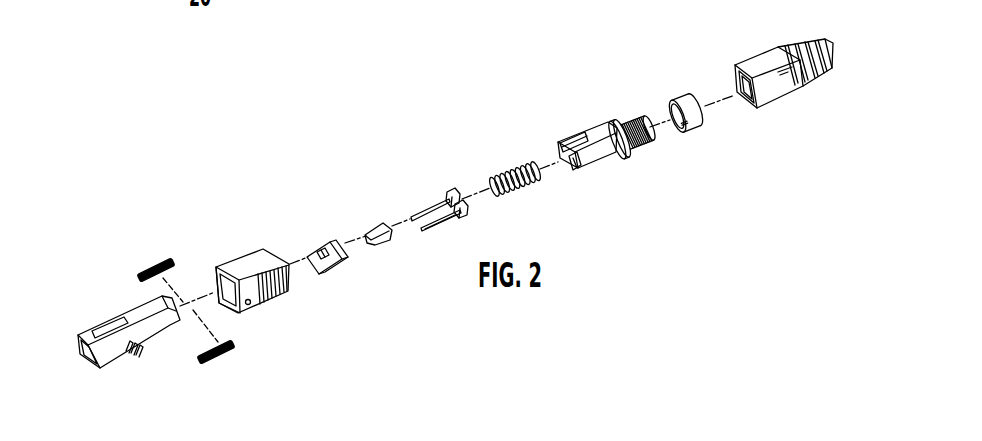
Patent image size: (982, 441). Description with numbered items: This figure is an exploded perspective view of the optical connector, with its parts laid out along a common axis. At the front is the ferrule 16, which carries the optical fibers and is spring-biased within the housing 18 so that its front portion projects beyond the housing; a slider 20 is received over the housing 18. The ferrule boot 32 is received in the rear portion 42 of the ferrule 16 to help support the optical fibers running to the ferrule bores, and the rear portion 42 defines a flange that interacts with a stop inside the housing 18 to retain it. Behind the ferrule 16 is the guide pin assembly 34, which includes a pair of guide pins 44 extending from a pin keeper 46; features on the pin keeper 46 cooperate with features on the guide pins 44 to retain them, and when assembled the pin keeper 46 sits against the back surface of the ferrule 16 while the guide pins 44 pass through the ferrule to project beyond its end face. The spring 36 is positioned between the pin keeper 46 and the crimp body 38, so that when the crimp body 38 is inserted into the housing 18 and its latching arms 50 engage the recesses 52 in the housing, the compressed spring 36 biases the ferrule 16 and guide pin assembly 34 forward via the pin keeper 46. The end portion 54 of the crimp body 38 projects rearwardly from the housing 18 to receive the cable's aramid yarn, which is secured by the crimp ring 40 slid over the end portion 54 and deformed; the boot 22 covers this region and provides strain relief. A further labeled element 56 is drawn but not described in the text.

The connector assembly 16 is at (334, 277).
The outer housing 18 is at (108, 309).
The plug housing 20 is at (252, 265).
The boot 22 is at (758, 55).
The spacer 32 is at (375, 226).
The contact pins 34 is at (427, 188).
The spring 36 is at (513, 170).
The body 38 is at (590, 121).
The nut 40 is at (683, 90).
The plate 42 is at (334, 238).
The pin 44 is at (437, 227).
The pin head 46 is at (468, 216).
The tab 50 is at (579, 171).
The ribs 52 is at (143, 349).
The threaded flange 54 is at (630, 115).
The springs 56 is at (160, 260).